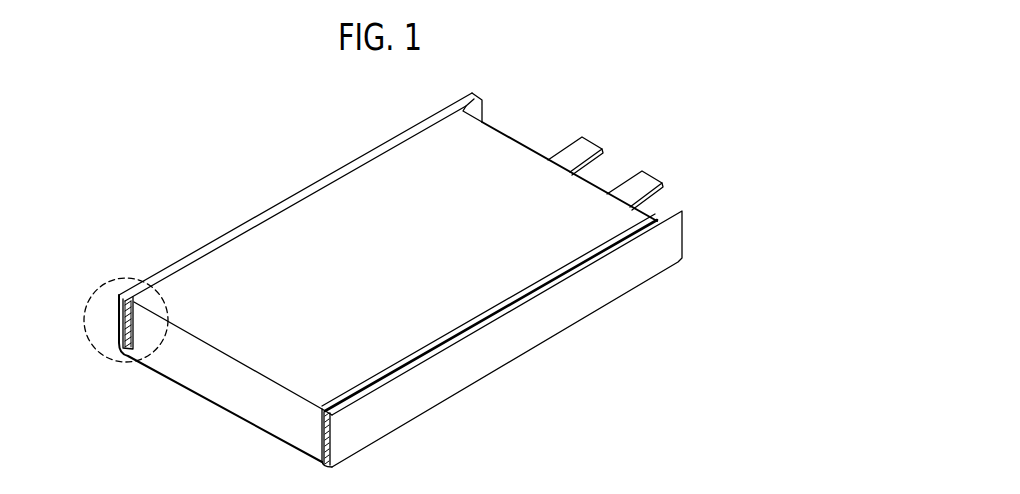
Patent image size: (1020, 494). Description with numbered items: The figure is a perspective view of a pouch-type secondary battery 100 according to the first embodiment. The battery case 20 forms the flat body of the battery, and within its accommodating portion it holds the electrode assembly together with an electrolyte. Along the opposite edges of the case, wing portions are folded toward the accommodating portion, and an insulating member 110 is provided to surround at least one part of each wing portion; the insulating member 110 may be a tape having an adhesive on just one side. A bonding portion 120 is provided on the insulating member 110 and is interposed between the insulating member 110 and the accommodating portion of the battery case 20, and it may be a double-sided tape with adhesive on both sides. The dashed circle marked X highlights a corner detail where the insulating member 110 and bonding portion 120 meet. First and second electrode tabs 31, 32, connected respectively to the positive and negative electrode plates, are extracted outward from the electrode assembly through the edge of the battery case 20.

The pouch-type secondary battery 100 is at (637, 76).
The battery case 20 is at (295, 237).
The insulating member 110 is at (108, 280).
The bonding portion 120 is at (125, 326).
The first electrode tab 31 is at (660, 179).
The second electrode tab 32 is at (588, 143).
The detail region X is at (112, 358).